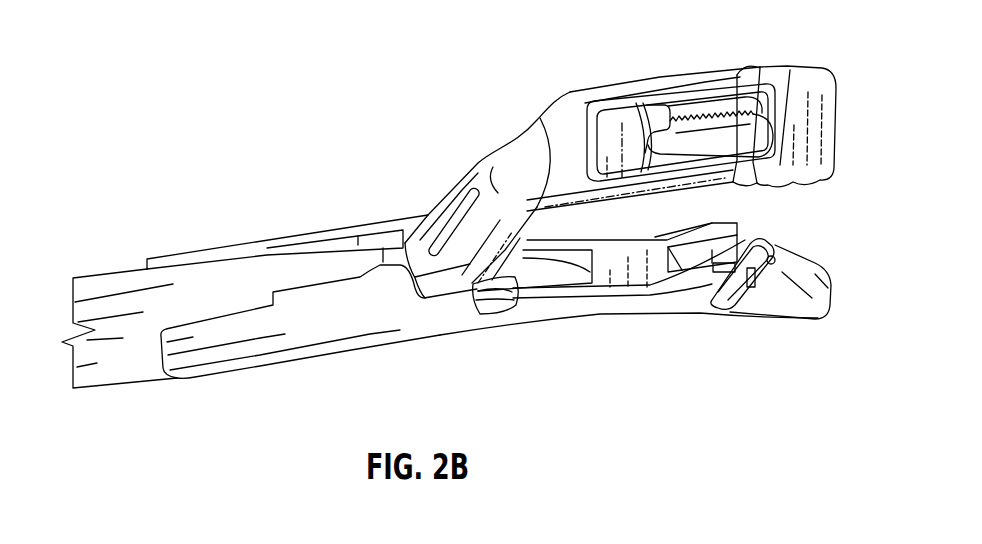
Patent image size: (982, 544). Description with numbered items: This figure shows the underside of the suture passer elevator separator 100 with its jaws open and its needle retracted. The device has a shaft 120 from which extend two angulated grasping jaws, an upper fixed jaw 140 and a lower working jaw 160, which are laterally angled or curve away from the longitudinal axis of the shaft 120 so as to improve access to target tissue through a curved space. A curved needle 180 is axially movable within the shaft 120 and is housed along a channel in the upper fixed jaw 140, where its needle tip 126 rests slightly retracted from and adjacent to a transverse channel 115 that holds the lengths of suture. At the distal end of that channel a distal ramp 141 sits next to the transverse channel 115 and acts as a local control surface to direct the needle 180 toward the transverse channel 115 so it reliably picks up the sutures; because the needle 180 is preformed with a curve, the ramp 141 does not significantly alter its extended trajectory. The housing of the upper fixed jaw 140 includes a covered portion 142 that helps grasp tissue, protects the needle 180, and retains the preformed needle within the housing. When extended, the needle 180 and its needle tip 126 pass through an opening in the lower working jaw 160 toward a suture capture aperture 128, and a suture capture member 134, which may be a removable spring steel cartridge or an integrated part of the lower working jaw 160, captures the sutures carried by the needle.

The suture passer elevator separator 100 is at (146, 46).
The transverse channel 115 is at (732, 310).
The shaft 120 is at (93, 273).
The needle tip 126 is at (733, 225).
The suture capture aperture 128 is at (720, 108).
The suture capture member 134 is at (700, 100).
The upper fixed jaw 140 is at (547, 255).
The distal ramp 141 is at (772, 241).
The covered portion 142 is at (645, 255).
The lower working jaw 160 is at (577, 95).
The curved needle 180 is at (505, 292).